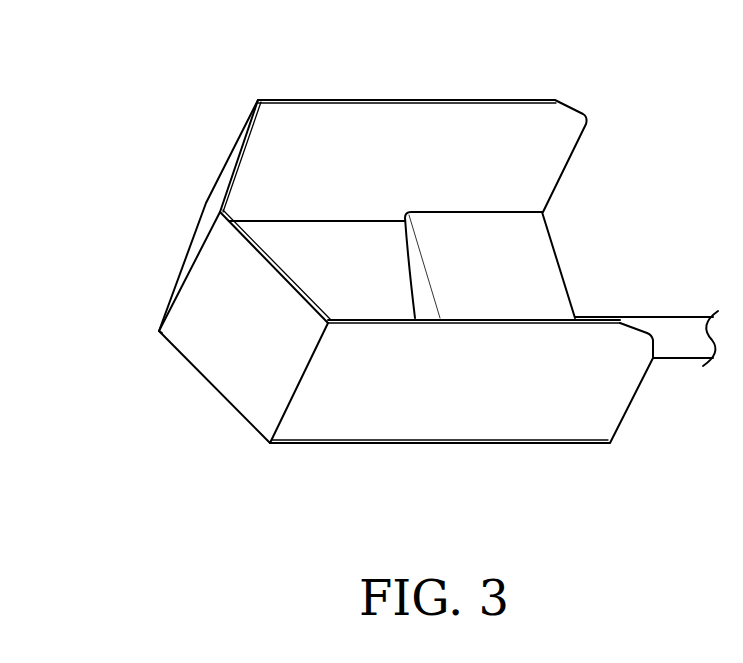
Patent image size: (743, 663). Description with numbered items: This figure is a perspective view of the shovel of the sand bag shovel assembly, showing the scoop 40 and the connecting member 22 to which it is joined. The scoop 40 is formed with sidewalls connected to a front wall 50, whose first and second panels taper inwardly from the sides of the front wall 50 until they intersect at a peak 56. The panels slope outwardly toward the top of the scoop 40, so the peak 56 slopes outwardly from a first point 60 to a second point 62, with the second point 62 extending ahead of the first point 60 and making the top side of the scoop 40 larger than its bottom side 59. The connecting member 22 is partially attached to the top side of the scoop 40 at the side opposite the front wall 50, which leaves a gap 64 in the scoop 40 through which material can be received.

The connecting member 22 is at (538, 270).
The scoop 40 is at (188, 406).
The front wall 50 is at (345, 245).
The peak 56 is at (190, 255).
The bottom side 59 is at (367, 97).
The first point 60 is at (219, 213).
The second point 62 is at (158, 330).
The gap 64 is at (363, 273).